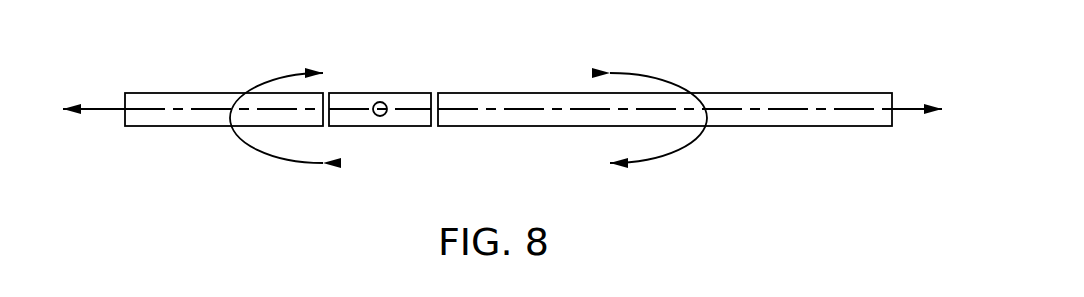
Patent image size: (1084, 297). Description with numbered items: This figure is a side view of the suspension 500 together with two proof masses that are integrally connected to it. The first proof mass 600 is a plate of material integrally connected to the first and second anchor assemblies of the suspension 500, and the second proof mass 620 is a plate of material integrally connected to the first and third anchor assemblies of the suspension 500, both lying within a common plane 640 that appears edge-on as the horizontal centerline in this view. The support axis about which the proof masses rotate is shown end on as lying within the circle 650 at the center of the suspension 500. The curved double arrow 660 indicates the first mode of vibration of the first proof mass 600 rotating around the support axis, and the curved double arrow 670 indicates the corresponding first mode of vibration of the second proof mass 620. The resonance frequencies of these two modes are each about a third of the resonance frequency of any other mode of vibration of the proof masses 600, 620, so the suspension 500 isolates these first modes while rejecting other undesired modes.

The suspension 500 is at (380, 92).
The first proof mass 600 is at (780, 97).
The second proof mass 620 is at (192, 95).
The common plane 640 is at (102, 107).
The circle 650 is at (382, 117).
The curved double arrow 660 is at (662, 77).
The curved double arrow 670 is at (268, 80).